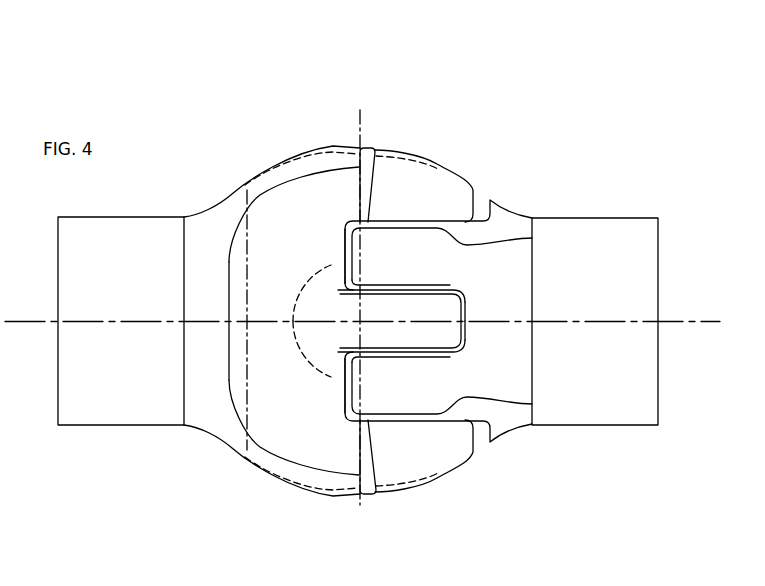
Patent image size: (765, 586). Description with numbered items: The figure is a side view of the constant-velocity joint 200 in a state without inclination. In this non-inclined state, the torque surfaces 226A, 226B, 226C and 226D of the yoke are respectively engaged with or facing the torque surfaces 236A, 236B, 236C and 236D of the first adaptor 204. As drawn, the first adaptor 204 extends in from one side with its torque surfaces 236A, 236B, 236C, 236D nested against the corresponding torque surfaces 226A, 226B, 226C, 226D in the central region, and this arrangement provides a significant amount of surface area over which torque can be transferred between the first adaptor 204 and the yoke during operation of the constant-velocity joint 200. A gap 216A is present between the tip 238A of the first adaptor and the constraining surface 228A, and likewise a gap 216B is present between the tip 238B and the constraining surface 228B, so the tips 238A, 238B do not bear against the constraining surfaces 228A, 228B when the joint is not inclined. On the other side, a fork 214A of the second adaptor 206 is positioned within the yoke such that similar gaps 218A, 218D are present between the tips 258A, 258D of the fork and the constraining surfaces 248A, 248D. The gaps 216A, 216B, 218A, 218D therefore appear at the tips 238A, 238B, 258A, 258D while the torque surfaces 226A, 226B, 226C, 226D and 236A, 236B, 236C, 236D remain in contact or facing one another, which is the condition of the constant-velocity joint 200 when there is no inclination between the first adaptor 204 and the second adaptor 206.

The constant-velocity joint 200 is at (497, 60).
The first adaptor 204 is at (602, 218).
The second adaptor 206 is at (200, 432).
The fork 214A is at (335, 162).
The gap 216A is at (323, 268).
The gap 216B is at (323, 375).
The gap 218A is at (372, 130).
The gap 218D is at (380, 512).
The torque surface 226A is at (403, 221).
The torque surface 226B is at (423, 293).
The torque surface 226C is at (423, 349).
The torque surface 226D is at (403, 421).
The constraining surface 228A is at (343, 247).
The constraining surface 228B is at (343, 395).
The torque surface 236A is at (532, 240).
The torque surface 236B is at (412, 286).
The torque surface 236C is at (412, 356).
The torque surface 236D is at (532, 404).
The tip 238A is at (358, 258).
The tip 238B is at (358, 384).
The constraining surface 248A is at (376, 151).
The constraining surface 248D is at (376, 490).
The tip 258A is at (373, 170).
The tip 258D is at (373, 472).